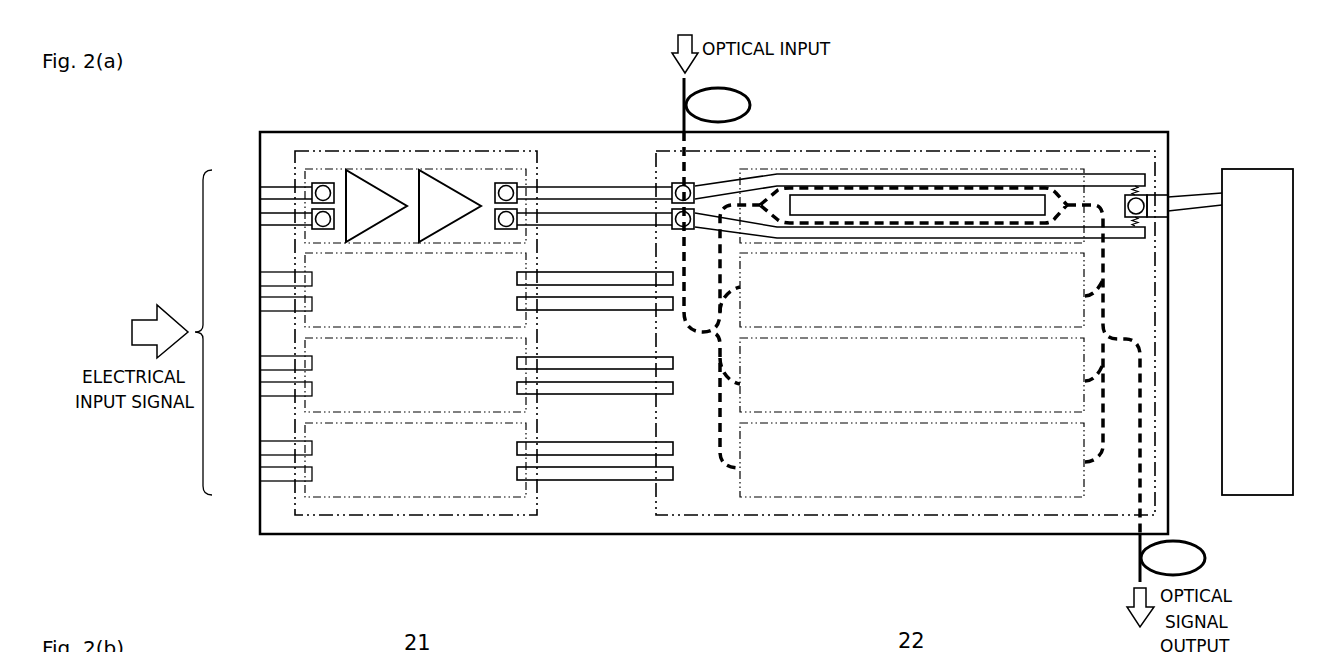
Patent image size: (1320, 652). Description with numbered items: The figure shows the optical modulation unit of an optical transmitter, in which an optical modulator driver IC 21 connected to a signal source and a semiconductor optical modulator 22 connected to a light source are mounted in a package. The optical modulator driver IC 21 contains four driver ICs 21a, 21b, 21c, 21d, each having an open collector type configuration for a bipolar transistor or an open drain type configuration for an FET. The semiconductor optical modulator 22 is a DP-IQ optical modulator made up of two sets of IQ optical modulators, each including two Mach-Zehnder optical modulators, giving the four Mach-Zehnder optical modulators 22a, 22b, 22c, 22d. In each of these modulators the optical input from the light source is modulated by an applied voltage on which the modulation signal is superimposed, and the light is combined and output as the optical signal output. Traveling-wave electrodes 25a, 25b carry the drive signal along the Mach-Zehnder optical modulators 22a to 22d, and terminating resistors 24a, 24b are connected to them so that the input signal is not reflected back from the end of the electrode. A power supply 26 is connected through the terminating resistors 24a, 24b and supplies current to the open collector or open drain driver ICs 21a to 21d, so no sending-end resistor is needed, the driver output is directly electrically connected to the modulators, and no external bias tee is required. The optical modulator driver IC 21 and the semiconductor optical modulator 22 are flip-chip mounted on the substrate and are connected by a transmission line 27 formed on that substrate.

The optical modulator driver IC 21 is at (418, 150).
The driver IC 21a is at (305, 172).
The driver IC 21b is at (305, 256).
The driver IC 21c is at (305, 340).
The driver IC 21d is at (305, 424).
The semiconductor optical modulator 22 is at (908, 150).
The Mach-Zehnder optical modulator 22a is at (1082, 168).
The Mach-Zehnder optical modulator 22b is at (1085, 318).
The Mach-Zehnder optical modulator 22c is at (1085, 397).
The Mach-Zehnder optical modulator 22d is at (1085, 482).
The terminating resistor 24a is at (1140, 191).
The terminating resistor 24b is at (1140, 220).
The traveling-wave electrode 25a is at (1132, 176).
The traveling-wave electrode 25b is at (1135, 238).
The power supply 26 is at (1257, 169).
The transmission line 27 is at (597, 187).